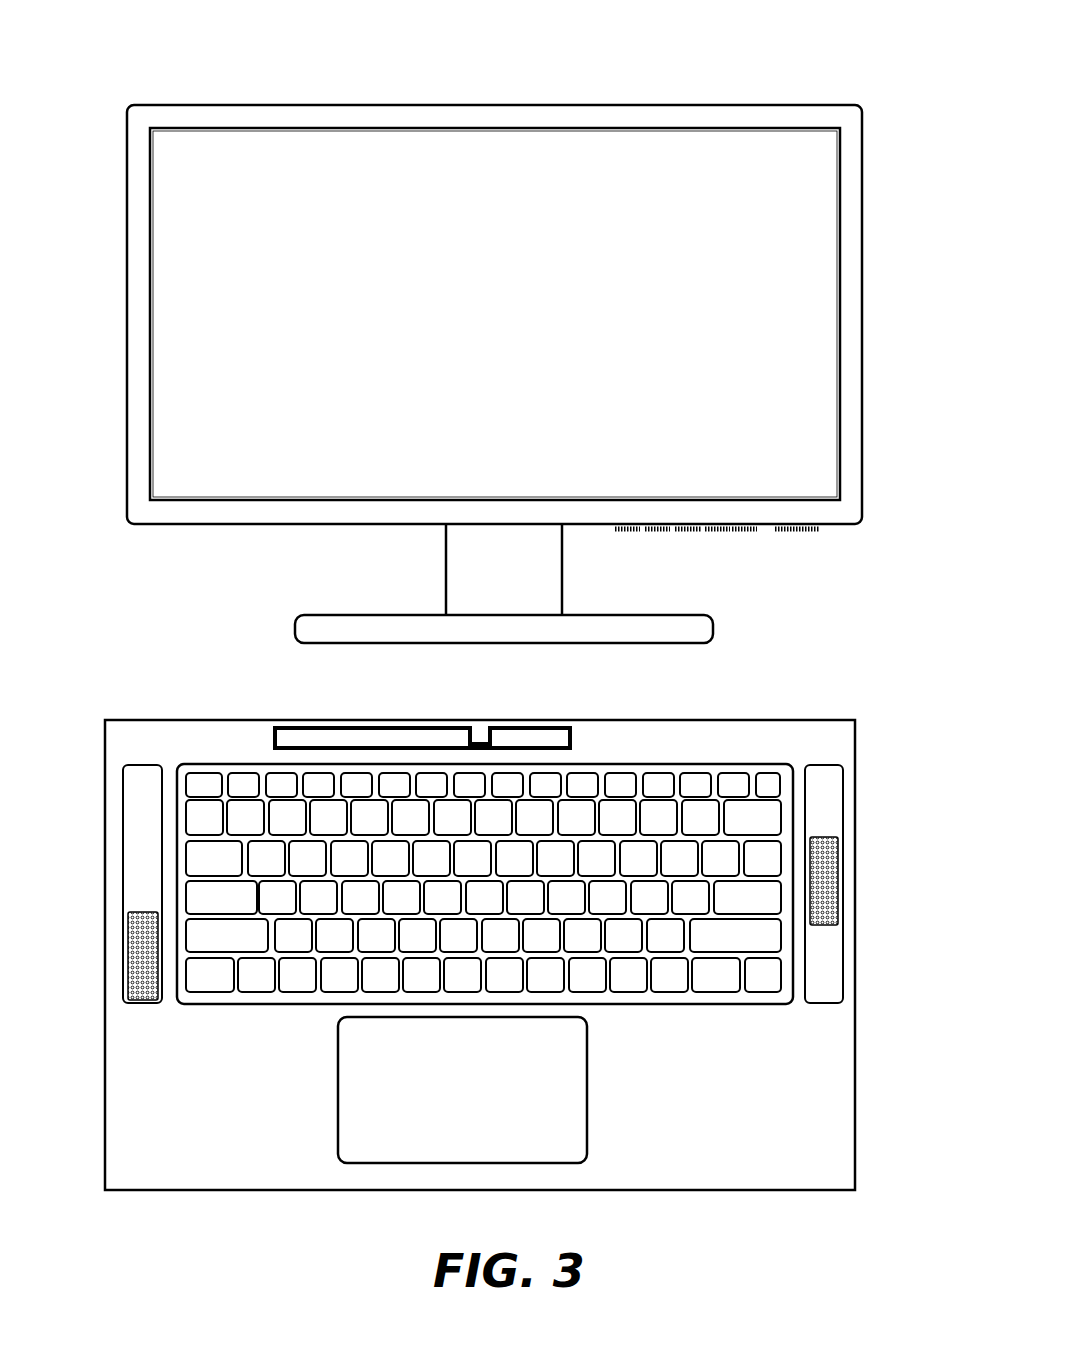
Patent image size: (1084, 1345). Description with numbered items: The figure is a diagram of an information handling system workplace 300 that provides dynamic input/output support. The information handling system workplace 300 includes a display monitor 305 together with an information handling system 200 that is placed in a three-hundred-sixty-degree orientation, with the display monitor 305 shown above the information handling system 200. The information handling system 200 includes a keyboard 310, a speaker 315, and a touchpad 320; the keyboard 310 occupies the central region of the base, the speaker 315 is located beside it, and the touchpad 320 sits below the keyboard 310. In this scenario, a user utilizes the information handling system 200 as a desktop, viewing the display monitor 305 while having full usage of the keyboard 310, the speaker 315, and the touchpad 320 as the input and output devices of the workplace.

The information handling system workplace 300 is at (158, 30).
The display monitor 305 is at (860, 357).
The information handling system 200 is at (660, 720).
The keyboard 310 is at (760, 762).
The speaker 315 is at (843, 800).
The touchpad 320 is at (567, 1163).